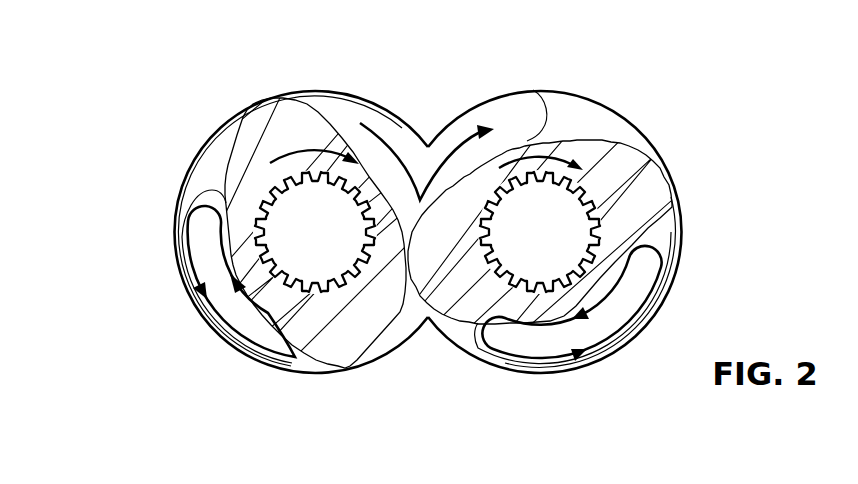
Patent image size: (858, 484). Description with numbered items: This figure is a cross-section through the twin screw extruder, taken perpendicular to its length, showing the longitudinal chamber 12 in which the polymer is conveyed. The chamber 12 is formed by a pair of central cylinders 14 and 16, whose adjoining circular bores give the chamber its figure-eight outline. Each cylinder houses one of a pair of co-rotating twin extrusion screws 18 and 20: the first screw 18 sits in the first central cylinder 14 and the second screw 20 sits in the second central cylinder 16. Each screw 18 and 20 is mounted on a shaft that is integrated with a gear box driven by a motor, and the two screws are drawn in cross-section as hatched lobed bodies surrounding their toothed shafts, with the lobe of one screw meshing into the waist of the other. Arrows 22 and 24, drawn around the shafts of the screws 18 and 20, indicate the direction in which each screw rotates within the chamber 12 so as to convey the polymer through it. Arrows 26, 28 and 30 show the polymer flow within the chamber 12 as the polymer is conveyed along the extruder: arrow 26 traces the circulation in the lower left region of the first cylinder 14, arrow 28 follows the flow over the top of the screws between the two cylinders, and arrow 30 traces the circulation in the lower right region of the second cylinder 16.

The longitudinal chamber 12 is at (428, 225).
The central cylinder 14 is at (315, 90).
The central cylinder 16 is at (606, 106).
The extrusion screw 18 is at (258, 113).
The extrusion screw 20 is at (650, 183).
The arrow 22 is at (327, 152).
The arrow 24 is at (557, 168).
The arrow 26 is at (222, 333).
The arrow 28 is at (478, 123).
The arrow 30 is at (588, 349).